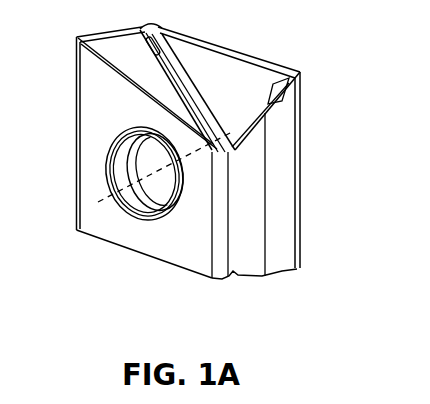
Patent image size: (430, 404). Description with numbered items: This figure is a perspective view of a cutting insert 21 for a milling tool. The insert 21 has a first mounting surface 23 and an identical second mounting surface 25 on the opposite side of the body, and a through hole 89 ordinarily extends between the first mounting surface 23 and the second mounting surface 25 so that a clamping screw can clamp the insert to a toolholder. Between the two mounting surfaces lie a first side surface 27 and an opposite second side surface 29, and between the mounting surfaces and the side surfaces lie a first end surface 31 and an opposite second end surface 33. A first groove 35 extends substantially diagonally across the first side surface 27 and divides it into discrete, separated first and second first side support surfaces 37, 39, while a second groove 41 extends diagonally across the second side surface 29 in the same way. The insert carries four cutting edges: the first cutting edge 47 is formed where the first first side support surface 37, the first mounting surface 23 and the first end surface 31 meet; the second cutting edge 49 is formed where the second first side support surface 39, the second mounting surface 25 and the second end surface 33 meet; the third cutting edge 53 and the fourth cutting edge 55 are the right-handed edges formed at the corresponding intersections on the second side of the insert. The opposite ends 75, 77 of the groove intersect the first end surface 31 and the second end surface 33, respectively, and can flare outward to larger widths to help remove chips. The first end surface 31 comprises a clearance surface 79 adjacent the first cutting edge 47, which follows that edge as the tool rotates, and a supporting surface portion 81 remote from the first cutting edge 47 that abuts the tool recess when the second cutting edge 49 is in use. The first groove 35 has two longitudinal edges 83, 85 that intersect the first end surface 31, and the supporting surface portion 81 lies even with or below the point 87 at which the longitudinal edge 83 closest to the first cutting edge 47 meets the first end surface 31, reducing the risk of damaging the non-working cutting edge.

The insert 21 is at (329, 149).
The first mounting surface 23 is at (268, 62).
The second mounting surface 25 is at (108, 226).
The first side surface 27 is at (262, 68).
The second side surface 29 is at (155, 250).
The first end surface 31 is at (187, 63).
The second end surface 33 is at (87, 81).
The first groove 35 is at (203, 82).
The first first side support surface 37 is at (252, 70).
The second first side support surface 39 is at (143, 68).
The second groove 41 is at (233, 271).
The first cutting edge 47 is at (300, 73).
The second cutting edge 49 is at (79, 37).
The third cutting edge 53 is at (298, 271).
The fourth cutting edge 55 is at (76, 232).
The groove end 75 is at (233, 145).
The groove end 77 is at (108, 44).
The clearance surface 79 is at (280, 132).
The supporting surface portion 81 is at (247, 222).
The longitudinal edge 83 is at (189, 50).
The longitudinal edge 85 is at (228, 152).
The point 87 is at (284, 164).
The through hole 89 is at (134, 126).